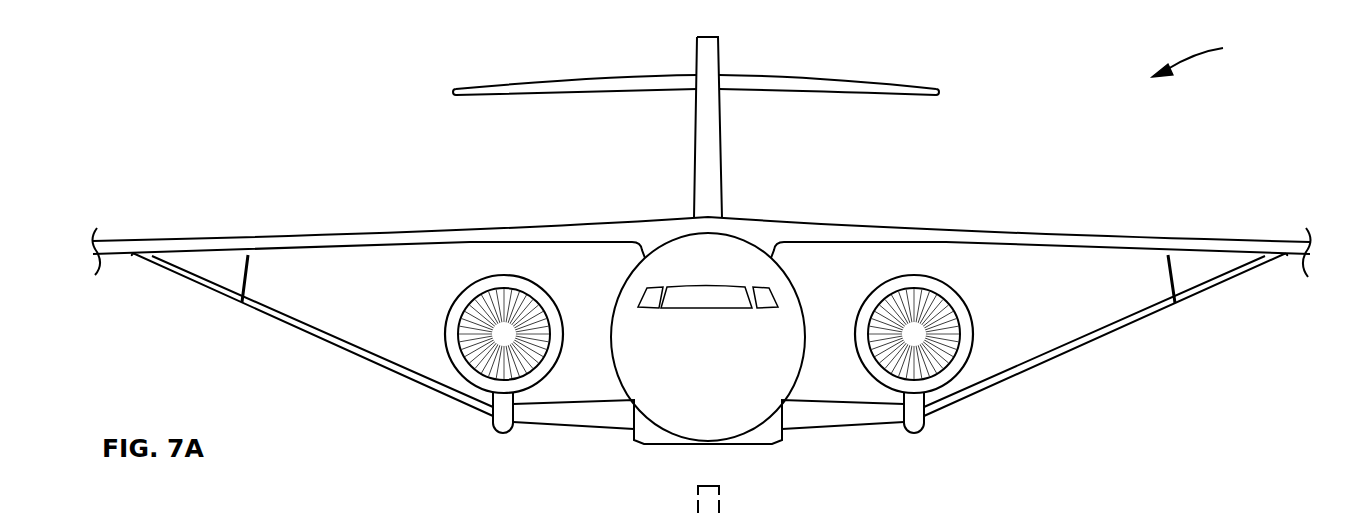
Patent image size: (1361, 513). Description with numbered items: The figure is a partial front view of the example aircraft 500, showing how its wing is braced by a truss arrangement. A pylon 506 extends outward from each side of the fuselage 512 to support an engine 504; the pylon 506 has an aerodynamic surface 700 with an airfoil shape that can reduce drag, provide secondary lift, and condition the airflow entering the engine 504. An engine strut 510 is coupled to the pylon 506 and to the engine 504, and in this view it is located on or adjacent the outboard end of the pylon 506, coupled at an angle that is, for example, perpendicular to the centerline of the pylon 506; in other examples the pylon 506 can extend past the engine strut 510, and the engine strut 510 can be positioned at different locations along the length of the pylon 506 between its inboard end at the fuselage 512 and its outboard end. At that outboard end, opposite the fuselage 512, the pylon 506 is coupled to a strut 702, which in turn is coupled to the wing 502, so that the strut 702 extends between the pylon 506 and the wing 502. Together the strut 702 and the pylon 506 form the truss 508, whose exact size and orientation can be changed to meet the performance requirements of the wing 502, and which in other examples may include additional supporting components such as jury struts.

The aircraft 500 is at (1172, 512).
The wing 502 is at (327, 235).
The engine 504 is at (557, 303).
The pylon 506 is at (528, 424).
The truss 508 is at (445, 397).
The engine strut 510 is at (497, 412).
The fuselage 512 is at (802, 303).
The aerodynamic surface 700 is at (580, 415).
The strut 702 is at (328, 345).